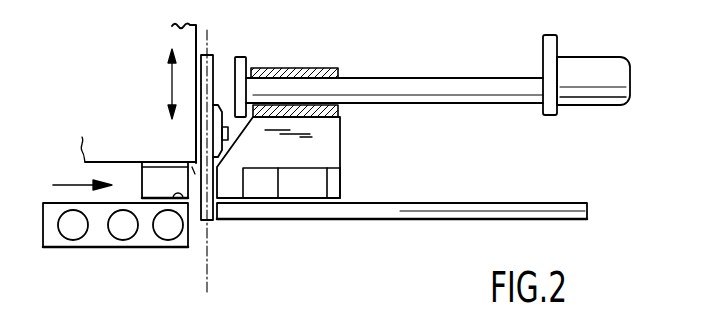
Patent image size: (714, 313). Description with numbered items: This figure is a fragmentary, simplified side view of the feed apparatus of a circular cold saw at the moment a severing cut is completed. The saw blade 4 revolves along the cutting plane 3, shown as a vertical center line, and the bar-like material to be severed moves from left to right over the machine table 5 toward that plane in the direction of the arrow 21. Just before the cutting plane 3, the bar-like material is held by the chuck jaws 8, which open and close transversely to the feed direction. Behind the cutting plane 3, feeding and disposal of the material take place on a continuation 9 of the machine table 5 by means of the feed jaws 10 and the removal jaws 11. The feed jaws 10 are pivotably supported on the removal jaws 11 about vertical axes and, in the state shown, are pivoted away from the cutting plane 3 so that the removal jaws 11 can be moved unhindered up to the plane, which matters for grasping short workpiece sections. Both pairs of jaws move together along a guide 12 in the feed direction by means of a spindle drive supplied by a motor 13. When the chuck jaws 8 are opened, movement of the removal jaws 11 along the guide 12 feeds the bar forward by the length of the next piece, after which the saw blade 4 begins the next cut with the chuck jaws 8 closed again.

The cutting plane 3 is at (209, 278).
The saw blade 4 is at (212, 72).
The machine table 5 is at (97, 232).
The chuck jaws 8 is at (157, 182).
The continuation of the machine table 9 is at (483, 207).
The feed jaws 10 is at (315, 190).
The removal jaws 11 is at (323, 135).
The guide 12 is at (413, 80).
The motor 13 is at (595, 68).
The arrow 21 is at (65, 185).